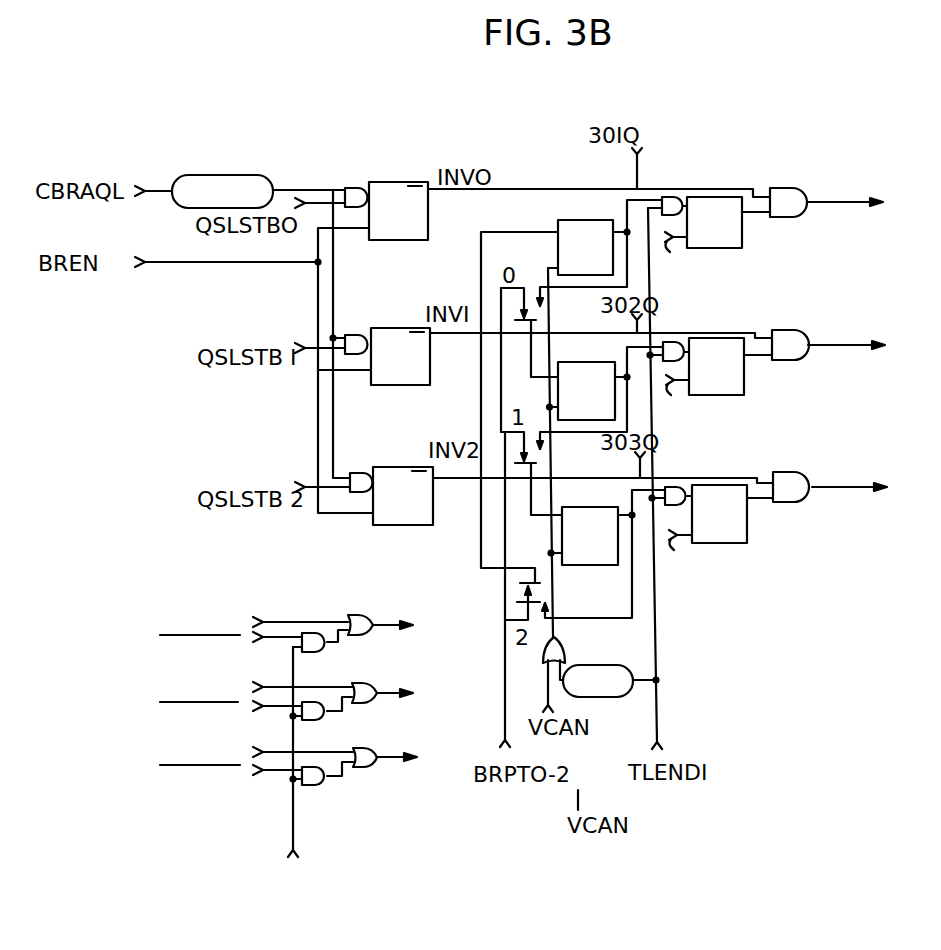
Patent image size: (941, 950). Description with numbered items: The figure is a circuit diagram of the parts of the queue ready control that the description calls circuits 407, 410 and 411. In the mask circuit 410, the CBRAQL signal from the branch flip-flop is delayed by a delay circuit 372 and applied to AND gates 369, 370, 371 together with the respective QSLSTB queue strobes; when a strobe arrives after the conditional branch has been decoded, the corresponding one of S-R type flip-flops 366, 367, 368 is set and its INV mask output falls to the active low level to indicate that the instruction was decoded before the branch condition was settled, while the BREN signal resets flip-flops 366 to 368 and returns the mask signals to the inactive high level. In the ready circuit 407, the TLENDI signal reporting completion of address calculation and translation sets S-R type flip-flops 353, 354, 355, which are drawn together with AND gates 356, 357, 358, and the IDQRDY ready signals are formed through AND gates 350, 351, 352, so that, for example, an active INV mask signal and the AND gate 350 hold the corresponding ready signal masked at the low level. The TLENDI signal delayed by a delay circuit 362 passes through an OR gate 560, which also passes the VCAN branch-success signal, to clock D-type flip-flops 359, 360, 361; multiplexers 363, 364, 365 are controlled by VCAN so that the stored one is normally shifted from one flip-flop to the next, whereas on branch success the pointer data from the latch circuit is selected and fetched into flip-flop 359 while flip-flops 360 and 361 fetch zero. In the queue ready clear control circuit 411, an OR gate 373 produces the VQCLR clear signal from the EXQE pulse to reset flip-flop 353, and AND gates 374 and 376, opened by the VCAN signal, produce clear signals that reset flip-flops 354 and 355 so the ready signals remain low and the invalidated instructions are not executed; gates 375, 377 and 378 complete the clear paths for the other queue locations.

The delay circuit 372 is at (252, 175).
The AND gate 369 is at (356, 188).
The AND gate 370 is at (357, 335).
The AND gate 371 is at (361, 473).
The S-R type flip-flop 366 is at (398, 182).
The S-R type flip-flop 367 is at (400, 328).
The S-R type flip-flop 368 is at (403, 467).
The circuit 410 is at (385, 335).
The D-type flip-flop 359 is at (583, 228).
The D-type flip-flop 360 is at (587, 362).
The D-type flip-flop 361 is at (586, 507).
The multiplexer 363 is at (538, 320).
The multiplexer 364 is at (538, 464).
The multiplexer 365 is at (542, 601).
The OR gate 560 is at (565, 646).
The delay circuit 362 is at (618, 697).
The AND gate 356 is at (672, 197).
The AND gate 357 is at (673, 342).
The AND gate 358 is at (675, 487).
The S-R type flip-flop 353 is at (742, 232).
The S-R type flip-flop 354 is at (744, 380).
The S-R type flip-flop 355 is at (747, 535).
The AND gate 350 is at (790, 188).
The AND gate 351 is at (792, 330).
The AND gate 352 is at (797, 502).
The circuit 407 is at (860, 436).
The queue ready clear control circuit 411 is at (335, 596).
The OR gate 373 is at (362, 635).
The AND gate 374 is at (313, 652).
The OR gate 375 is at (366, 703).
The AND gate 376 is at (313, 720).
The OR gate 377 is at (367, 767).
The AND gate 378 is at (313, 785).